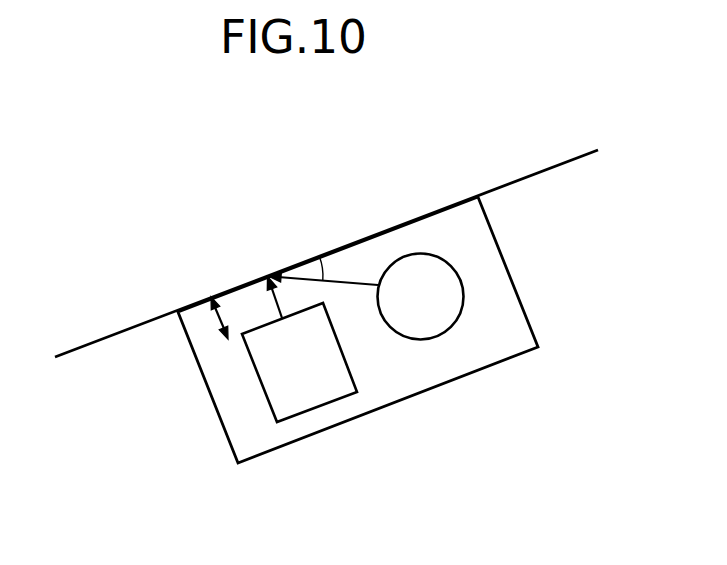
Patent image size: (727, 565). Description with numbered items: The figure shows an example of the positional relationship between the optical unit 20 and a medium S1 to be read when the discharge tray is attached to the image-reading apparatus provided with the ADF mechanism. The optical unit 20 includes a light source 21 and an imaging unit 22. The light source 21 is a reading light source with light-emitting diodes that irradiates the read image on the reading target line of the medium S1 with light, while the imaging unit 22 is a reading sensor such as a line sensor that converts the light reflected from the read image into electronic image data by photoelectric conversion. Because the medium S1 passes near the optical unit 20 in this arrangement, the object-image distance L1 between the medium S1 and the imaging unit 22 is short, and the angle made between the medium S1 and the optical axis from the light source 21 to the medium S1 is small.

The optical unit 20 is at (217, 412).
The light source 21 is at (440, 334).
The imaging unit 22 is at (322, 408).
The medium to be read S1 is at (530, 173).
The object-image distance L1 is at (212, 320).